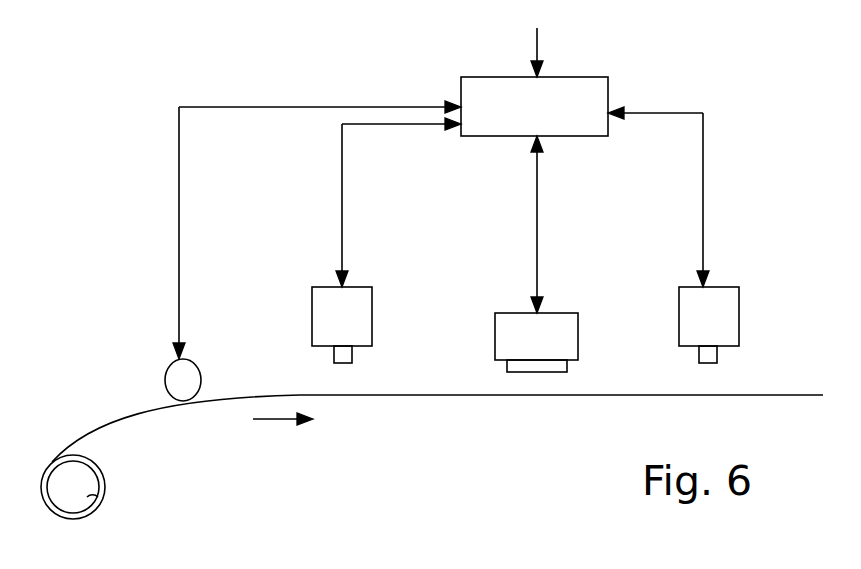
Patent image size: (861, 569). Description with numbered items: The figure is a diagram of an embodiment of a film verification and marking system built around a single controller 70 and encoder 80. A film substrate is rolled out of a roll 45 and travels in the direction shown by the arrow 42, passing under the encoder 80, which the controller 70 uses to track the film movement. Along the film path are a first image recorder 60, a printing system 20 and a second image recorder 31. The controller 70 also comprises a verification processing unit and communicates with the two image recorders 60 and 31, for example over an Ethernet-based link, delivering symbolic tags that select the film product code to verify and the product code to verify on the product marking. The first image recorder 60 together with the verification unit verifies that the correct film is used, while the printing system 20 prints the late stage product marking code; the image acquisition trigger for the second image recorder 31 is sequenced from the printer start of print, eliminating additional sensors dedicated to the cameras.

The controller 70 is at (441, 193).
The first image recorder 60 is at (342, 325).
The printing system 20 is at (536, 342).
The second image recorder 31 is at (709, 325).
The encoder 80 is at (169, 361).
The roll 45 is at (96, 499).
The arrow 42 is at (277, 422).